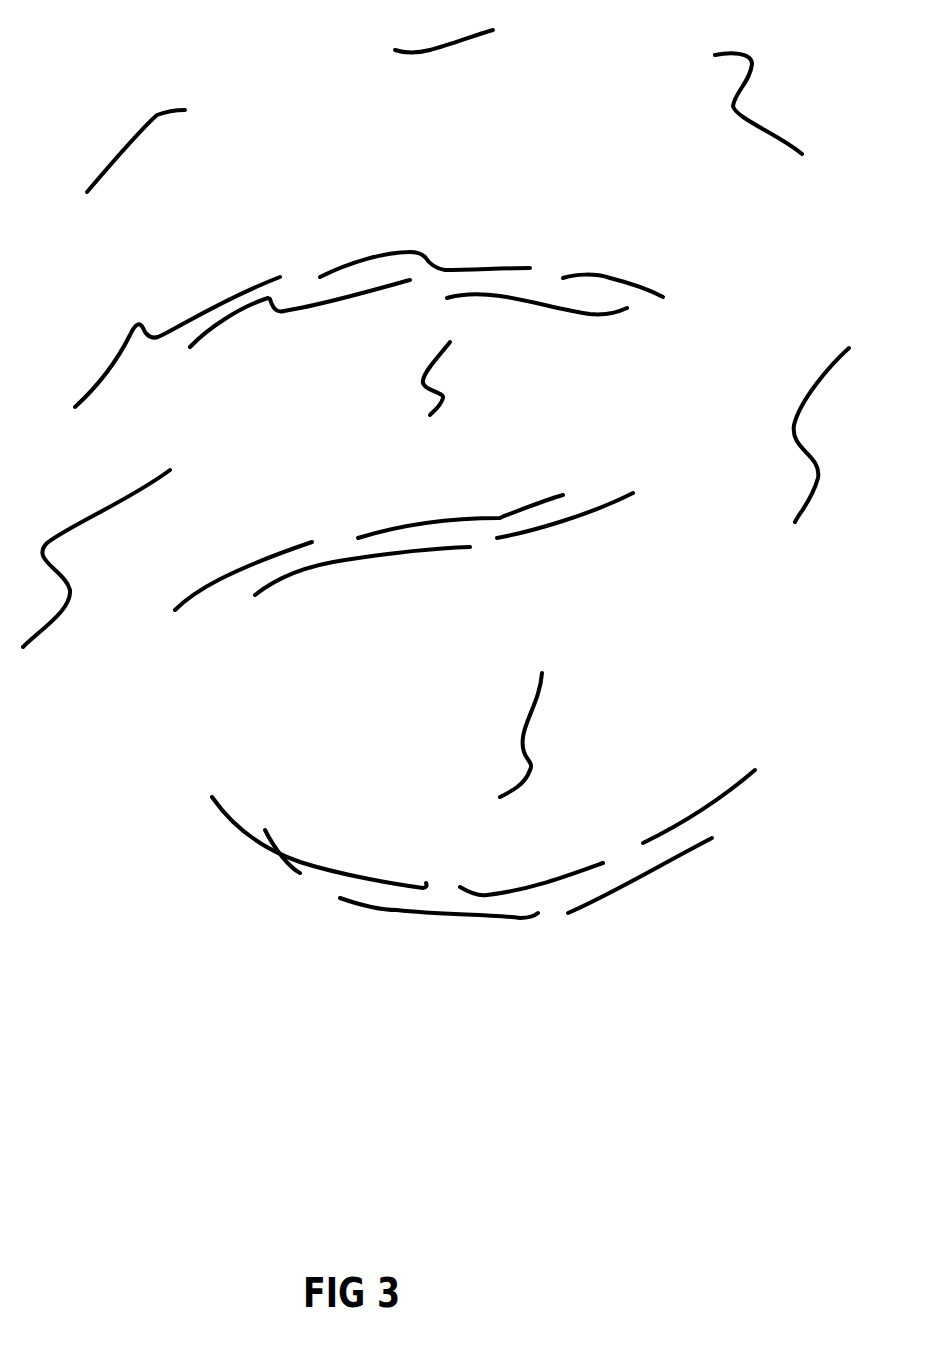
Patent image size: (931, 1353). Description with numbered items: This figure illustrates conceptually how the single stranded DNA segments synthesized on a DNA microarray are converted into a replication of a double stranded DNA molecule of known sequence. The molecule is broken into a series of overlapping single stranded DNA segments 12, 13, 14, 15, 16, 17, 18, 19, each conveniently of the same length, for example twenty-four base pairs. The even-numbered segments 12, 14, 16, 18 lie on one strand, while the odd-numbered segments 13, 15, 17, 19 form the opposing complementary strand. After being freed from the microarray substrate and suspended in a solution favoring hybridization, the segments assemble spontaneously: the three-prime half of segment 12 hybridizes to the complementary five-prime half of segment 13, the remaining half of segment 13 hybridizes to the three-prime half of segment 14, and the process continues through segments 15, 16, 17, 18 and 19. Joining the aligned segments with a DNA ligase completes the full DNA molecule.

The single stranded DNA segment 12 is at (189, 307).
The single stranded DNA segment 13 is at (317, 313).
The single stranded DNA segment 14 is at (322, 847).
The single stranded DNA segment 15 is at (538, 312).
The single stranded DNA segment 16 is at (538, 863).
The single stranded DNA segment 17 is at (735, 875).
The single stranded DNA segment 18 is at (705, 798).
The single stranded DNA segment 19 is at (540, 541).